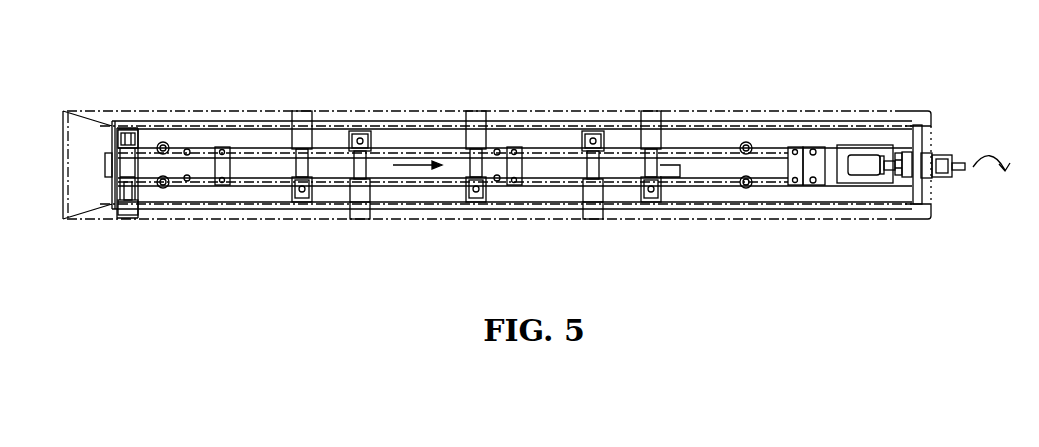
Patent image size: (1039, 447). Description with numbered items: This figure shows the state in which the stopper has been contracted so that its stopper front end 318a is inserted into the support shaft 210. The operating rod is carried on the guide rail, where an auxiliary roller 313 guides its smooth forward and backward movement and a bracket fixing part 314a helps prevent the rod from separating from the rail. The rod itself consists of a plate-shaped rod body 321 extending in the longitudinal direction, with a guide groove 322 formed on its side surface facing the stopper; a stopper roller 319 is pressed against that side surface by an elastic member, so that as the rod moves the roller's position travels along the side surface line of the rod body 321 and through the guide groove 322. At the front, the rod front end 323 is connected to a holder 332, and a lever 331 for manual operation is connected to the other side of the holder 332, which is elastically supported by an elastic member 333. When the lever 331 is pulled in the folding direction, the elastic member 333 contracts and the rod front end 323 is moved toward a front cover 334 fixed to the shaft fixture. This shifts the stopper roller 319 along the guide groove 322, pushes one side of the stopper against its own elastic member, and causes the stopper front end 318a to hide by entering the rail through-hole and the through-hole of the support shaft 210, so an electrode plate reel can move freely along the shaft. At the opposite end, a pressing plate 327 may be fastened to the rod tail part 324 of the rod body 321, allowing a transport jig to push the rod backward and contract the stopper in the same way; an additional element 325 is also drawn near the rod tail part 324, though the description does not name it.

The support shaft 210 is at (812, 111).
The auxiliary roller 313 is at (164, 144).
The bracket fixing part 314a is at (228, 163).
The stopper front end 318a is at (657, 112).
The stopper roller 319 is at (356, 140).
The rod body 321 is at (557, 167).
The guide groove 322 is at (370, 155).
The rod front end 323 is at (828, 176).
The rod tail part 324 is at (140, 172).
The upper clamp 325 is at (118, 136).
The pressing plate 327 is at (108, 178).
The lever 331 is at (960, 172).
The holder 332 is at (882, 165).
The elastic member 333 is at (898, 153).
The front cover 334 is at (922, 137).